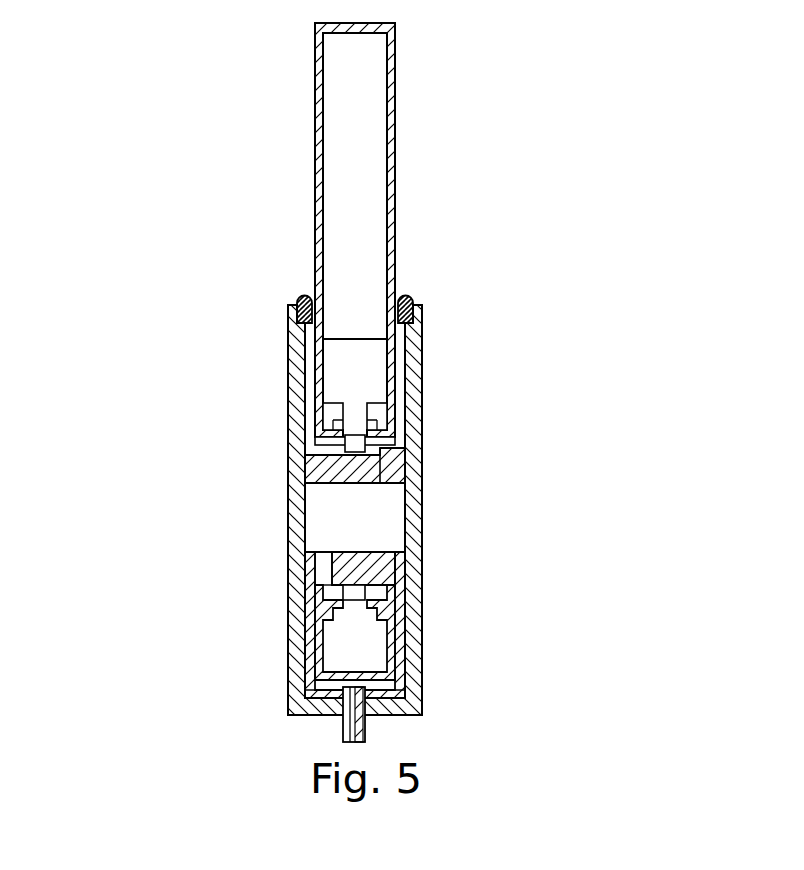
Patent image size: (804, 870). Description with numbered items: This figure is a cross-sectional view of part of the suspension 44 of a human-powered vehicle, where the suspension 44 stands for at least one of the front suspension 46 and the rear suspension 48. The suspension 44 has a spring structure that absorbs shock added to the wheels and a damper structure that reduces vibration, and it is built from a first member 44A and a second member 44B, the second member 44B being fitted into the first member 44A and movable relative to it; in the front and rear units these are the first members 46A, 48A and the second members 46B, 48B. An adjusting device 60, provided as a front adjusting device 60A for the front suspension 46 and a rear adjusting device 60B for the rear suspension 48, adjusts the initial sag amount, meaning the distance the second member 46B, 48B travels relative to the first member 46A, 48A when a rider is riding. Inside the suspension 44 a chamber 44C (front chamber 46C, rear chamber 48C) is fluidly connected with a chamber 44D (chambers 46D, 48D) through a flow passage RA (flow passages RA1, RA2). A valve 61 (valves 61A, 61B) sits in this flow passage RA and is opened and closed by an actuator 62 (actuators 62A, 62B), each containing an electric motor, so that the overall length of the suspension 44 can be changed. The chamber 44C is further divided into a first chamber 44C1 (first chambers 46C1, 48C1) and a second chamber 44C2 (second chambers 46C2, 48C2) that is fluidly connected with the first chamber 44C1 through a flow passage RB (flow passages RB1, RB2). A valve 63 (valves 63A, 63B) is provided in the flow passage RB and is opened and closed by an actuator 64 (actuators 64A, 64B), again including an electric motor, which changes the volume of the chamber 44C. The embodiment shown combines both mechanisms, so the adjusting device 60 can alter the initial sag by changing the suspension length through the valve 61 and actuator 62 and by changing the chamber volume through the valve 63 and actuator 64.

The suspension 44 is at (380, 382).
The front suspension 46 is at (380, 382).
The rear suspension 48 is at (380, 382).
The second member 44B is at (456, 230).
The second member of the front suspension 46B is at (456, 230).
The second member of the rear suspension 48B is at (398, 176).
The adjusting device 60 is at (464, 501).
The front adjusting device 60A is at (464, 501).
The rear adjusting device 60B is at (452, 316).
The chamber 44D is at (245, 331).
The chamber 46D is at (245, 331).
The chamber 48D is at (291, 340).
The actuator 62 is at (458, 410).
The actuator 62A is at (458, 410).
The actuator 62B is at (420, 405).
The valve 61 is at (453, 459).
The valve 61A is at (453, 459).
The valve 61B is at (383, 446).
The first member 44A is at (236, 471).
The first member of the front suspension 46A is at (236, 471).
The first member of the rear suspension 48A is at (290, 467).
The flow passage RA is at (451, 516).
The flow passage RA1 is at (451, 516).
The flow passage RA2 is at (405, 484).
The first chamber 44C1 is at (221, 519).
The first chamber 46C1 is at (221, 519).
The first chamber 48C1 is at (323, 528).
The chamber 44C is at (342, 612).
The front chamber 46C is at (342, 612).
The rear chamber 48C is at (342, 612).
The flow passage RB is at (218, 580).
The flow passage RB1 is at (218, 580).
The flow passage RB2 is at (323, 568).
The valve 63 is at (460, 616).
The valve 63A is at (460, 616).
The valve 63B is at (365, 592).
The actuator 64 is at (456, 625).
The actuator 64A is at (456, 625).
The actuator 64B is at (392, 650).
The second chamber 44C2 is at (223, 713).
The second chamber 46C2 is at (223, 713).
The second chamber 48C2 is at (223, 713).